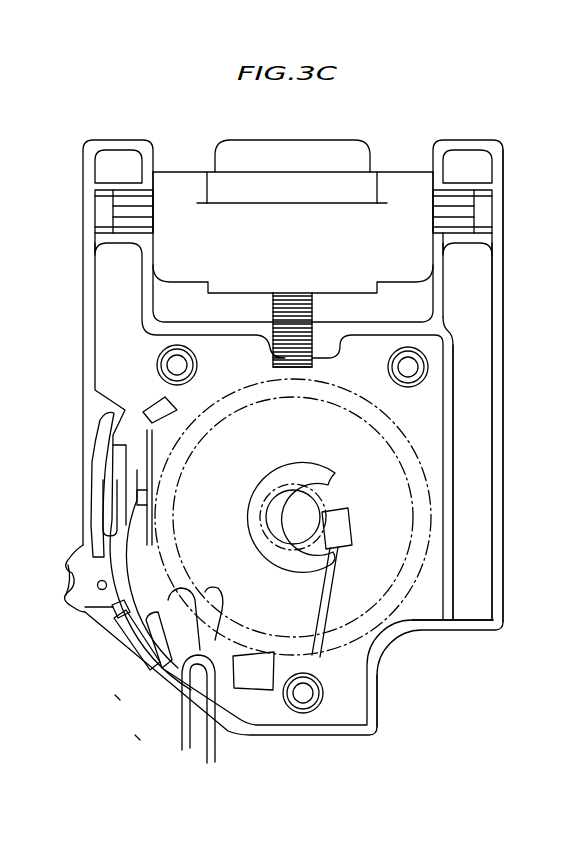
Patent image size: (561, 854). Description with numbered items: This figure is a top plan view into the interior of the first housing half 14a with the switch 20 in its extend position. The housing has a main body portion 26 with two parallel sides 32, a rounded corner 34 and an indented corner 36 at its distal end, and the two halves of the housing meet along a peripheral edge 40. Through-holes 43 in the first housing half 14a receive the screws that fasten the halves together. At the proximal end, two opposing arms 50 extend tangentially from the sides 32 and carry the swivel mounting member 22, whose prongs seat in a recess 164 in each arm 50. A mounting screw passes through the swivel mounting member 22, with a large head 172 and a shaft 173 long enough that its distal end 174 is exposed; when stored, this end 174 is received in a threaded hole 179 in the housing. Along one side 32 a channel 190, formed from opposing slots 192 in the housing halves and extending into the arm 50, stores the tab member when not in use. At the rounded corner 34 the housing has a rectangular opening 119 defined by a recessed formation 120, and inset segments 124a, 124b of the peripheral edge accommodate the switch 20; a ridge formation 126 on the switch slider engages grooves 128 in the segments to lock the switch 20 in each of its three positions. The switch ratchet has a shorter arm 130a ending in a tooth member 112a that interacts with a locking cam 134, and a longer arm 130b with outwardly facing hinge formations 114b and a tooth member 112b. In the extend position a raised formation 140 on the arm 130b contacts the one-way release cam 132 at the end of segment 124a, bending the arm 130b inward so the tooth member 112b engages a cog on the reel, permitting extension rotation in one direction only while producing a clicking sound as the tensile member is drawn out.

The swivel mounting member 22 is at (393, 137).
The arms 50 is at (95, 148).
The large head 172 is at (270, 150).
The recess 164 is at (100, 205).
The shaft 173 is at (303, 292).
The threaded hole 179 is at (312, 335).
The distal end 174 is at (312, 367).
The slots 192 is at (467, 282).
The sides 32 is at (84, 357).
The through-holes 43 is at (160, 357).
The locking cam 134 is at (158, 408).
The peripheral edge 40 is at (500, 413).
The tooth member 112a is at (103, 425).
The recessed formation 120 is at (108, 462).
The arm 130a is at (125, 478).
The segment 124a is at (150, 467).
The rectangular opening 119 is at (90, 530).
The switch 20 is at (68, 575).
The ridge formation 126 is at (185, 575).
The hinge formations 114b is at (210, 600).
The tooth member 112b is at (215, 620).
The grooves 128 is at (160, 660).
The segment 124b is at (150, 675).
The rounded corner 34 is at (115, 695).
The first housing half 14a is at (135, 735).
The one-way release cam 132 is at (182, 747).
The raised formation 140 is at (208, 757).
The arm 130b is at (260, 690).
The main body portion 26 is at (413, 570).
The indented corner 36 is at (377, 675).
The channel 190 is at (477, 603).